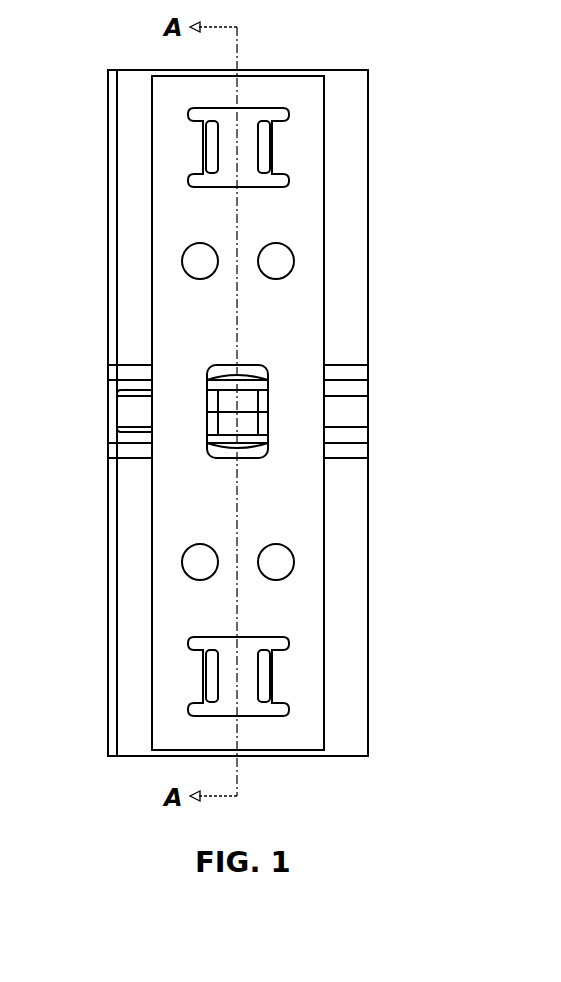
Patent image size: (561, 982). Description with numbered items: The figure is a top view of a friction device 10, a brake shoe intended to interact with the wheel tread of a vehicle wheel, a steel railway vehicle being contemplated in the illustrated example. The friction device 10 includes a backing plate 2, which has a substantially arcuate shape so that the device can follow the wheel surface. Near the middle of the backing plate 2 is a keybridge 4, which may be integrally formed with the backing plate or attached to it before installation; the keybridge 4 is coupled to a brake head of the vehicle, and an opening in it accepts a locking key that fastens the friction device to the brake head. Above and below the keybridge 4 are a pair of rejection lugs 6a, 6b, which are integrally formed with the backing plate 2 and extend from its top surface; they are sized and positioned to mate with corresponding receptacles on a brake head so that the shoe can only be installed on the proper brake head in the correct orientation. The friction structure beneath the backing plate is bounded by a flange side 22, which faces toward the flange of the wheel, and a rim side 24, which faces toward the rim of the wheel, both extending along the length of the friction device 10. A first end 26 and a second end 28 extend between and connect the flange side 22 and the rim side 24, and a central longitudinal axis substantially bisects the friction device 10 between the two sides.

The friction device 10 is at (410, 30).
The backing plate 2 is at (300, 308).
The keybridge 4 is at (258, 412).
The rejection lug 6a is at (249, 147).
The rejection lug 6b is at (248, 677).
The flange side 22 is at (117, 535).
The rim side 24 is at (368, 530).
The first end 26 is at (340, 70).
The second end 28 is at (332, 756).